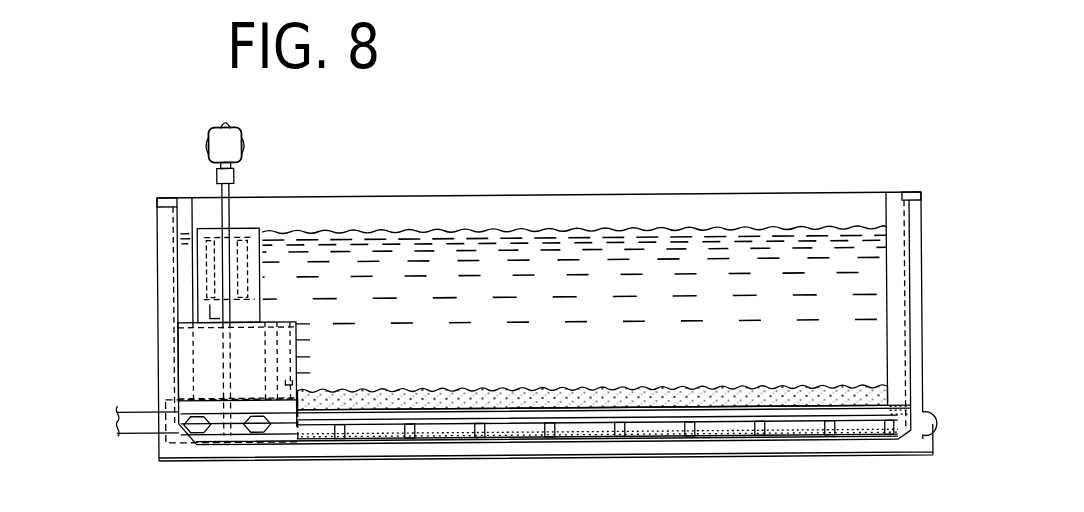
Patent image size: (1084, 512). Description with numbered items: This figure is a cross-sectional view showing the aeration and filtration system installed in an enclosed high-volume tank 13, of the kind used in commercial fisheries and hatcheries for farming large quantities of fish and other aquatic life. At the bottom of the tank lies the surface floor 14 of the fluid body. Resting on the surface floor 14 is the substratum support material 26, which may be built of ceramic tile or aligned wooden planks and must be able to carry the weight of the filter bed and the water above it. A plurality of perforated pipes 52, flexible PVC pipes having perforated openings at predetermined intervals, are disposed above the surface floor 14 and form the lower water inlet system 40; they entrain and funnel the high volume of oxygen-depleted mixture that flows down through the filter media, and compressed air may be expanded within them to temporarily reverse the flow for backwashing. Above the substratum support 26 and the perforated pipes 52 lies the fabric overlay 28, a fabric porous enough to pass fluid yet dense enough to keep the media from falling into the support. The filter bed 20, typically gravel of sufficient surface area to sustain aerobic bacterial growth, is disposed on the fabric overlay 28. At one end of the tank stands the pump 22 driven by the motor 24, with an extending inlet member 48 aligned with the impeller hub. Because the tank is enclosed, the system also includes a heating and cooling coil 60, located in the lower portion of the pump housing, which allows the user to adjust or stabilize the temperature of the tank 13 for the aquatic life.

The high-volume tank 13 is at (141, 234).
The surface floor 14 is at (740, 449).
The filter bed 20 is at (565, 392).
The pump 22 is at (207, 340).
The motor 24 is at (236, 138).
The substratum support material 26 is at (520, 441).
The fabric overlay 28 is at (425, 407).
The lower water inlet system 40 is at (930, 427).
The extending inlet member 48 is at (243, 235).
The perforated pipes 52 is at (716, 425).
The heating and cooling coil 60 is at (233, 434).